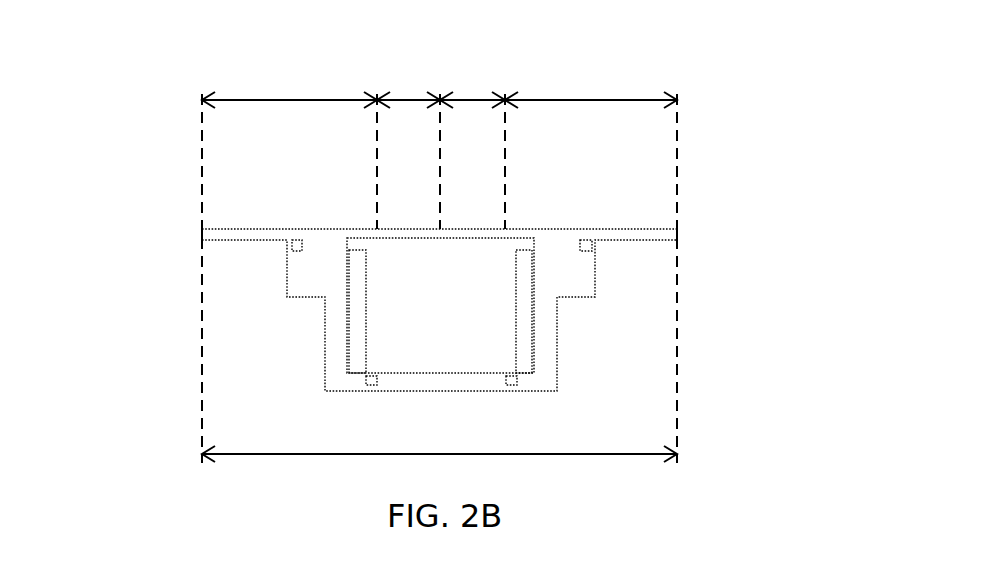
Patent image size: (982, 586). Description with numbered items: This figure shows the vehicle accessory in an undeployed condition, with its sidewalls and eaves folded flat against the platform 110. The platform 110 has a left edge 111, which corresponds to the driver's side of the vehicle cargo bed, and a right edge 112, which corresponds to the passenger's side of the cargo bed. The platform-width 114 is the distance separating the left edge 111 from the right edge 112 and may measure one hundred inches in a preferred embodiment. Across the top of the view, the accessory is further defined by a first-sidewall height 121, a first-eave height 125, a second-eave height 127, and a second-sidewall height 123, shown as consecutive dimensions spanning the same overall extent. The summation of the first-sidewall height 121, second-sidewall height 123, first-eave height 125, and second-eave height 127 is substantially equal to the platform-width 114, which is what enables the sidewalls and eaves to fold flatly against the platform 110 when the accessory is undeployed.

The platform 110 is at (473, 236).
The left edge 111 is at (202, 232).
The right edge 112 is at (677, 235).
The platform-width 114 is at (228, 453).
The first-sidewall height 121 is at (252, 100).
The first-eave height 125 is at (413, 100).
The second-eave height 127 is at (480, 100).
The second-sidewall height 123 is at (578, 100).